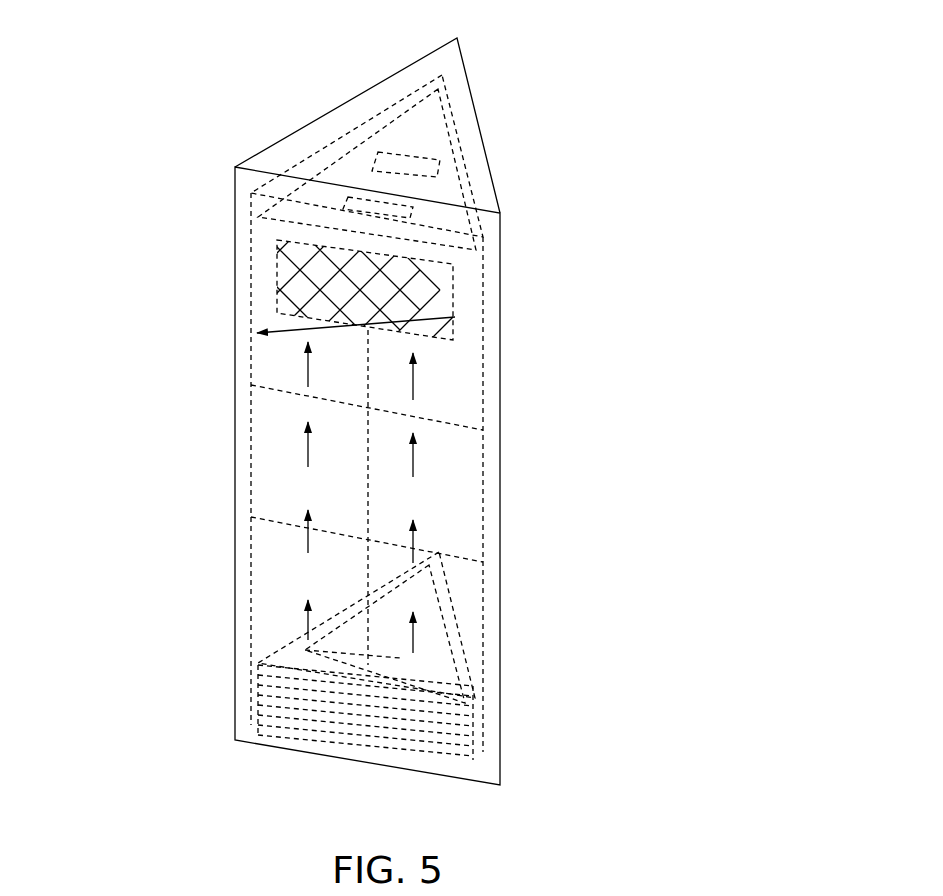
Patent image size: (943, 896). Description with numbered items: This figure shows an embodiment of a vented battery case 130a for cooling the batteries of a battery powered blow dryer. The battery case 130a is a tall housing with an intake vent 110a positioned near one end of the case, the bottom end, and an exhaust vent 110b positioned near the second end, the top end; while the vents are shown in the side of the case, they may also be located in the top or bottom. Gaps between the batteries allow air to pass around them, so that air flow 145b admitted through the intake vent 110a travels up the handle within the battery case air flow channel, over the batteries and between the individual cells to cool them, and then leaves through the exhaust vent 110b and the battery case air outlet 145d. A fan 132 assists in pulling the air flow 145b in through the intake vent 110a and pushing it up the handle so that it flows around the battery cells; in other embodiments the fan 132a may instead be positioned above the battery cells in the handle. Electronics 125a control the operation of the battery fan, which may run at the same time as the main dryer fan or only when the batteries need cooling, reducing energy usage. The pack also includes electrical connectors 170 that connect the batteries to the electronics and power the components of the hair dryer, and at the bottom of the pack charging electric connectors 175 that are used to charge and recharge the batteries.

The battery case 130a is at (236, 91).
The fan 132a is at (296, 163).
The electrical connectors 170 is at (442, 173).
The electronics 125a is at (417, 210).
The exhaust vent 110b is at (453, 302).
The battery case air outlet 145d is at (345, 277).
The fan 132 is at (297, 643).
The charging electric connectors 175 is at (400, 664).
The air flow 145b is at (413, 713).
The intake vent 110a is at (475, 738).